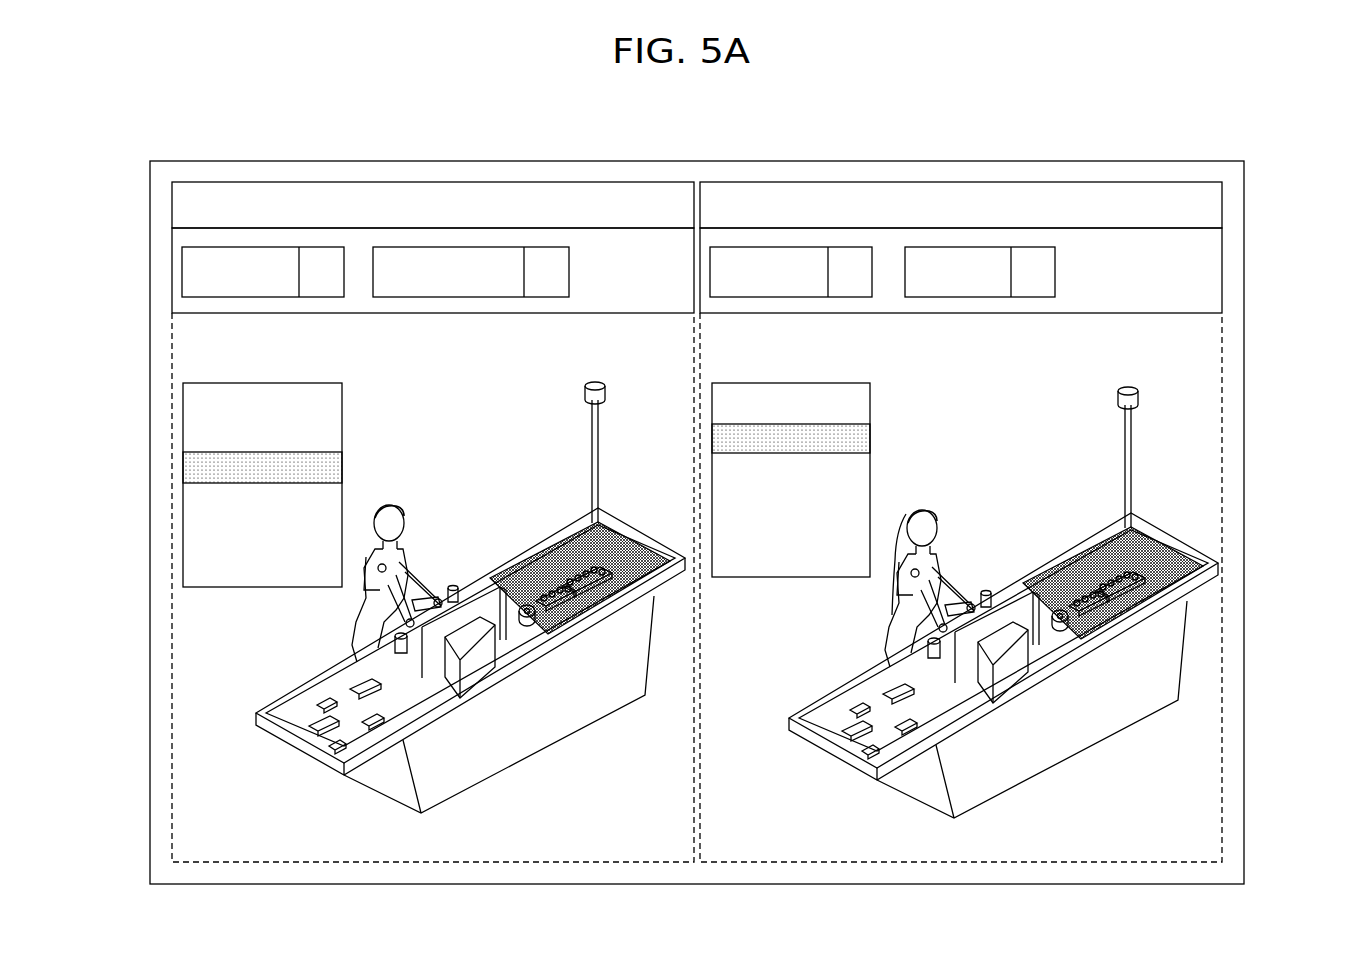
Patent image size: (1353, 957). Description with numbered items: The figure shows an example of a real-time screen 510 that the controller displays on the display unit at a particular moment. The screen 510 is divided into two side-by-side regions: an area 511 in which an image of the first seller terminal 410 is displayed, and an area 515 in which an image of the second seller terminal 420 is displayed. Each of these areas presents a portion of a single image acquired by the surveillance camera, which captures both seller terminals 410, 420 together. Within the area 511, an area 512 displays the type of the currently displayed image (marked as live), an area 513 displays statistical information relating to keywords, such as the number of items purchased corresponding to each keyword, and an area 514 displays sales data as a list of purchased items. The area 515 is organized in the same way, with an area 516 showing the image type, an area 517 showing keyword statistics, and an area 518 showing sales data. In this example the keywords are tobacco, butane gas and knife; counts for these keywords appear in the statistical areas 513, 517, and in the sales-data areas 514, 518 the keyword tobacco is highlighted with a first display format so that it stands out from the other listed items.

The real-time screen 510 is at (1178, 131).
The area 511 is at (178, 352).
The area 512 is at (178, 203).
The area 513 is at (178, 271).
The area 514 is at (263, 383).
The area 515 is at (1216, 372).
The area 516 is at (1216, 205).
The area 517 is at (1216, 271).
The area 518 is at (791, 383).
The first seller terminal 410 is at (297, 750).
The second seller terminal 420 is at (830, 755).